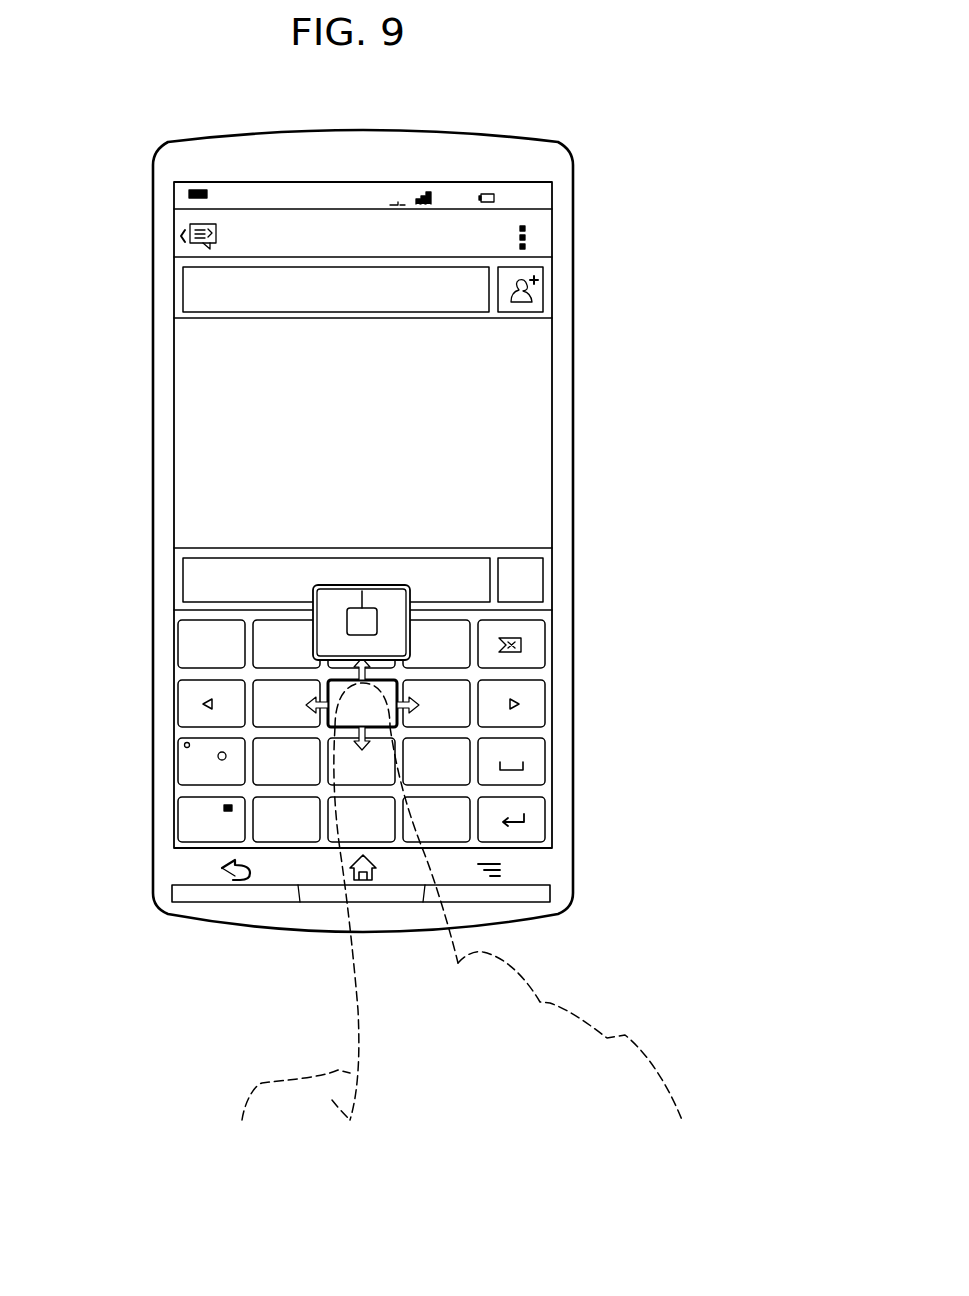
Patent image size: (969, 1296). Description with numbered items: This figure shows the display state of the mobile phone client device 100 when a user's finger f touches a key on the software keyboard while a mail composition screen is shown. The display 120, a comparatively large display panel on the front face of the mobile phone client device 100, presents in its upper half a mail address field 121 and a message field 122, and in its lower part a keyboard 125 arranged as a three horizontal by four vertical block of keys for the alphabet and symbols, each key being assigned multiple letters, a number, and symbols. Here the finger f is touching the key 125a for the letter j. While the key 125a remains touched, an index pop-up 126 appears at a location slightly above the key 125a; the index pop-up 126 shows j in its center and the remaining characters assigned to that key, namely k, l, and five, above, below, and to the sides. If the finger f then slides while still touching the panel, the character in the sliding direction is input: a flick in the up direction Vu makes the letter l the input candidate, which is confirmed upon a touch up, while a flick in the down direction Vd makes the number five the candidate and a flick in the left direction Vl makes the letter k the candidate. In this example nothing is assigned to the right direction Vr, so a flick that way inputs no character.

The mobile phone client device 100 is at (518, 138).
The display 120 is at (551, 401).
The mail address field 121 is at (237, 312).
The message field 122 is at (225, 560).
The keyboard 125 is at (263, 690).
The key 125a is at (398, 716).
The index pop-up 126 is at (372, 585).
The up direction Vu is at (372, 679).
The down direction Vd is at (377, 733).
The left direction Vl is at (315, 709).
The right direction Vr is at (415, 708).
The finger f is at (550, 1003).